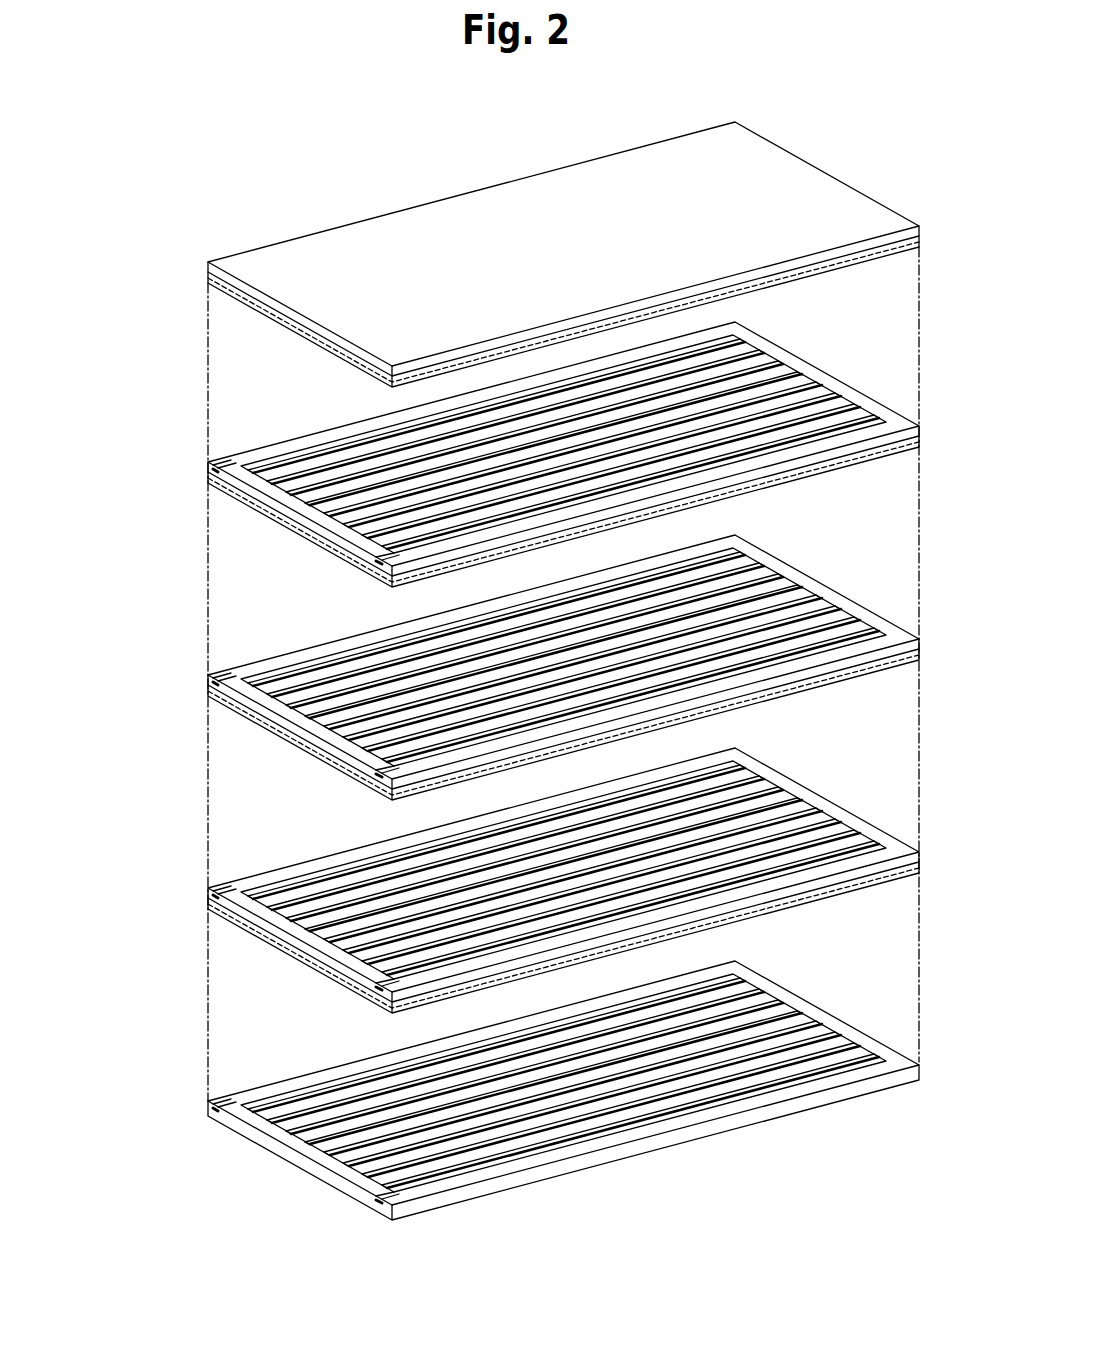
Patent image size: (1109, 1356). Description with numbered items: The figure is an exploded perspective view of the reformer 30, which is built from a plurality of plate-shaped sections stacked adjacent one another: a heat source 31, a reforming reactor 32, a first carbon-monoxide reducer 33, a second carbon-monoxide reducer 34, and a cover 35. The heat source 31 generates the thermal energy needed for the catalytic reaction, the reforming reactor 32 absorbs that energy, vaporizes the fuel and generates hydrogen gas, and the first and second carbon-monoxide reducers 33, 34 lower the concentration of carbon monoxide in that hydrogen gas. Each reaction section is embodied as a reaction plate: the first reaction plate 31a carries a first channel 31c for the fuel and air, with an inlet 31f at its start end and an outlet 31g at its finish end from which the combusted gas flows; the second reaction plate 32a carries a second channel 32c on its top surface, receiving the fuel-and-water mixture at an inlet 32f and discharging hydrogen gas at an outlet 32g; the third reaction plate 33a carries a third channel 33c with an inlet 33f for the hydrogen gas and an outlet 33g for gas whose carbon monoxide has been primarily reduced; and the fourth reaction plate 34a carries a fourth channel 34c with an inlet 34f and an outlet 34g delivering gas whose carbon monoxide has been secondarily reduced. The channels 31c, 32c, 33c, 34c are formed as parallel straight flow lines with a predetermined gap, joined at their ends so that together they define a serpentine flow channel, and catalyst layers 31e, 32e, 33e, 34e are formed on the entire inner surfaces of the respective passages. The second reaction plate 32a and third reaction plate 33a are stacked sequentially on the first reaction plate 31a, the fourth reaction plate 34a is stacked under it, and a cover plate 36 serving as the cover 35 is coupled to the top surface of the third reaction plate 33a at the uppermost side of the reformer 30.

The reformer 30 is at (132, 263).
The heat source 31 is at (552, 883).
The first reaction plate 31a is at (563, 870).
The first channel 31c is at (563, 862).
The catalyst layer 31e is at (563, 722).
The inlet 31f is at (337, 998).
The outlet 31g is at (185, 902).
The reforming reactor 32 is at (552, 669).
The second reaction plate 32a is at (293, 515).
The second channel 32c is at (563, 647).
The catalyst layer 32e is at (836, 470).
The inlet 32f is at (337, 786).
The outlet 32g is at (185, 688).
The first carbon-monoxide reducer 33 is at (889, 370).
The third reaction plate 33a is at (288, 515).
The third channel 33c is at (806, 377).
The catalyst layer 33e is at (836, 268).
The inlet 33f is at (211, 470).
The outlet 33g is at (355, 567).
The second carbon-monoxide reducer 34 is at (552, 1093).
The fourth reaction plate 34a is at (547, 1083).
The fourth channel 34c is at (563, 1074).
The catalyst layer 34e is at (563, 935).
The inlet 34f is at (185, 1117).
The outlet 34g is at (338, 1209).
The cover 35 is at (873, 173).
The cover plate 36 is at (808, 166).